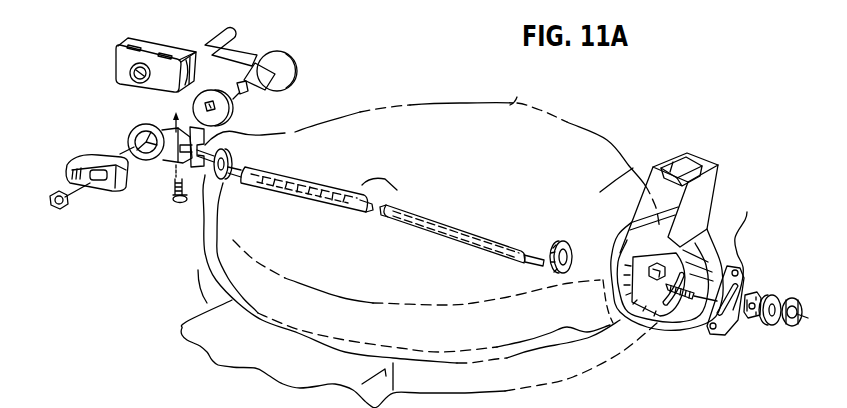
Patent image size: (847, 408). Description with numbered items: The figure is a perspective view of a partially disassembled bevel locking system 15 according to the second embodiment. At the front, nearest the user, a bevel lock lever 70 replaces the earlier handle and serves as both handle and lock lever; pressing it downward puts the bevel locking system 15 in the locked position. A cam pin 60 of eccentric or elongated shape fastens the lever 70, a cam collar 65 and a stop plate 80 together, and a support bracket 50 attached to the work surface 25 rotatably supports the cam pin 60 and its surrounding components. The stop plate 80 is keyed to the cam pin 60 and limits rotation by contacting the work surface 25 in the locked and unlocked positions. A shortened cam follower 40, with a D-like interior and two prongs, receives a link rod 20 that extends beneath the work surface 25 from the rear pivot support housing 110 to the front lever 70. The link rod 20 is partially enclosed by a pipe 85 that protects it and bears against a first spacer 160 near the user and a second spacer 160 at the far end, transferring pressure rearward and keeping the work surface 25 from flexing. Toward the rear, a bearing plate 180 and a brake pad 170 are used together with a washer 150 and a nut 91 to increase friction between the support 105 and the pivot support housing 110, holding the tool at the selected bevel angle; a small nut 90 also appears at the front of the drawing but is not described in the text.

The bevel locking system 15 is at (92, 98).
The link rod 20 is at (540, 238).
The work surface 25 is at (517, 97).
The cam follower 40 is at (128, 130).
The support bracket 50 is at (115, 61).
The cam pin 60 is at (280, 92).
The cam collar 65 is at (232, 126).
The bevel lock lever 70 is at (270, 48).
The stop plate 80 is at (72, 160).
The pipe 85 is at (417, 227).
The nut 90 is at (50, 190).
The nut 91 is at (786, 328).
The support 105 is at (712, 153).
The pivot support housing 110 is at (613, 215).
The washer 150 is at (760, 326).
The spacer 160 is at (233, 159).
The brake pad 170 is at (728, 335).
The bearing plate 180 is at (747, 222).